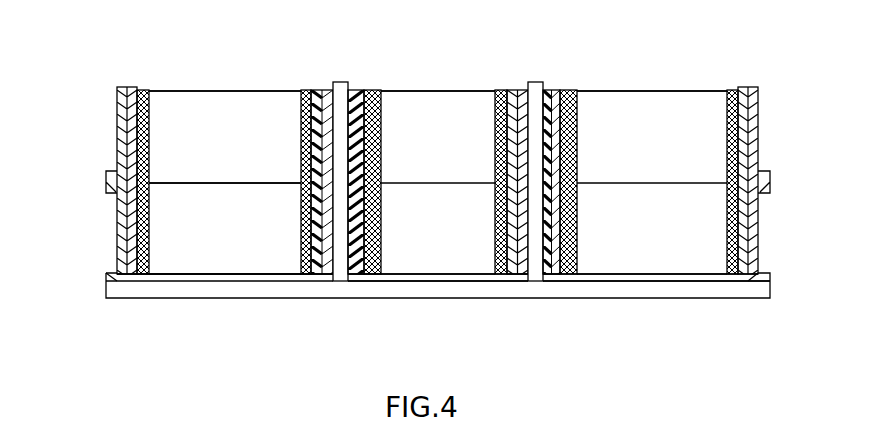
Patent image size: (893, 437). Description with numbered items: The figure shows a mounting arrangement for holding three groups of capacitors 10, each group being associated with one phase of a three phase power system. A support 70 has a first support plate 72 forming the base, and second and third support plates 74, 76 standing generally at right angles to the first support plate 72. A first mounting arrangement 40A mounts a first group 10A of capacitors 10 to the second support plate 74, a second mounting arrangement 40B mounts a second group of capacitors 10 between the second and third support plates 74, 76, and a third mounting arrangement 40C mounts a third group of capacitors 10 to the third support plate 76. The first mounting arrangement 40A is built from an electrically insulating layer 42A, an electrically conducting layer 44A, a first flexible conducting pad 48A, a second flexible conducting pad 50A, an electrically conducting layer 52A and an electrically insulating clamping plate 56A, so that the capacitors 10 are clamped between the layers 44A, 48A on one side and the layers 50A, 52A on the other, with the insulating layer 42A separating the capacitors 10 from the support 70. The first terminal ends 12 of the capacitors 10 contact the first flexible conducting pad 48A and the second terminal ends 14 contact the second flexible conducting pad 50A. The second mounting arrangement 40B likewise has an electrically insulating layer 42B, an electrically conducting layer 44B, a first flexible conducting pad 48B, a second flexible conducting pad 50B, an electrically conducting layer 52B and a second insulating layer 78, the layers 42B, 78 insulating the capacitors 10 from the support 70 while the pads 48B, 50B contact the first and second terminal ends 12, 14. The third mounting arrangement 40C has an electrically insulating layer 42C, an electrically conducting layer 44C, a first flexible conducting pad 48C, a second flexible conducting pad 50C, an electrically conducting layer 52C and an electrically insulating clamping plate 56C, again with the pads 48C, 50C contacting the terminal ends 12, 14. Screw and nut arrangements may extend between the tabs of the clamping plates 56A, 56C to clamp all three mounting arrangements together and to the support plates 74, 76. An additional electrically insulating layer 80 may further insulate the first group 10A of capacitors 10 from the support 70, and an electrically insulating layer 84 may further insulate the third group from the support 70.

The capacitors 10 is at (240, 166).
The first terminal ends 12 is at (301, 132).
The second terminal ends 14 is at (149, 122).
The first group of capacitors 10A is at (242, 76).
The first mounting arrangement 40A is at (208, 68).
The second mounting arrangement 40B is at (438, 74).
The third mounting arrangement 40C is at (645, 70).
The electrically insulating layer 42A is at (326, 88).
The electrically insulating layer 42B is at (355, 275).
The electrically insulating layer 42C is at (552, 90).
The electrically conducting layer 44A is at (321, 90).
The electrically conducting layer 44B is at (368, 275).
The electrically conducting layer 44C is at (552, 275).
The first flexible conducting pad 48A is at (305, 90).
The first flexible conducting pad 48B is at (377, 275).
The first flexible conducting pad 48C is at (572, 275).
The second flexible conducting pad 50A is at (143, 90).
The second flexible conducting pad 50B is at (513, 275).
The second flexible conducting pad 50C is at (732, 90).
The electrically conducting layer 52A is at (131, 87).
The electrically conducting layer 52B is at (525, 275).
The electrically conducting layer 52C is at (746, 88).
The electrically insulating clamping plate 56A is at (118, 87).
The electrically insulating clamping plate 56C is at (761, 285).
The support 70 is at (140, 298).
The first support plate 72 is at (432, 298).
The second support plate 74 is at (344, 84).
The third support plate 76 is at (536, 82).
The second insulating layer 78 is at (522, 96).
The electrically insulating layer 80 is at (195, 276).
The electrically insulating layer 84 is at (660, 281).